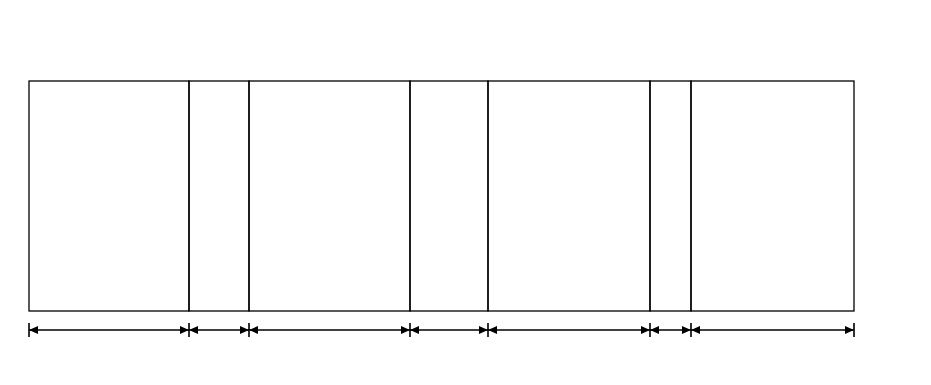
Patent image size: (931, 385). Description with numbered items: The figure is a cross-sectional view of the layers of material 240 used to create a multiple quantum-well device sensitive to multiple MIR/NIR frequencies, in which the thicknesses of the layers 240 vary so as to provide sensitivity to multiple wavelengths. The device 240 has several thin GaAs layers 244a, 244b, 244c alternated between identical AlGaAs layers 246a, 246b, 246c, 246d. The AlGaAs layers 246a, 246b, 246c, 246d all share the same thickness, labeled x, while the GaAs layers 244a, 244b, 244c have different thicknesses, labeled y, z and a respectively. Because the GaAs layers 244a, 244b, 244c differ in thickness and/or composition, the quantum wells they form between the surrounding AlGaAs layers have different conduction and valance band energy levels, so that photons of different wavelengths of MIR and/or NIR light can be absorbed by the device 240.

The layers of material 240 is at (110, 47).
The AlGaAs layer 246a is at (105, 80).
The GaAs layer 244a is at (218, 80).
The AlGaAs layer 246b is at (332, 80).
The GaAs layer 244b is at (439, 80).
The AlGaAs layer 246c is at (550, 80).
The GaAs layer 244c is at (660, 80).
The AlGaAs layer 246d is at (770, 80).